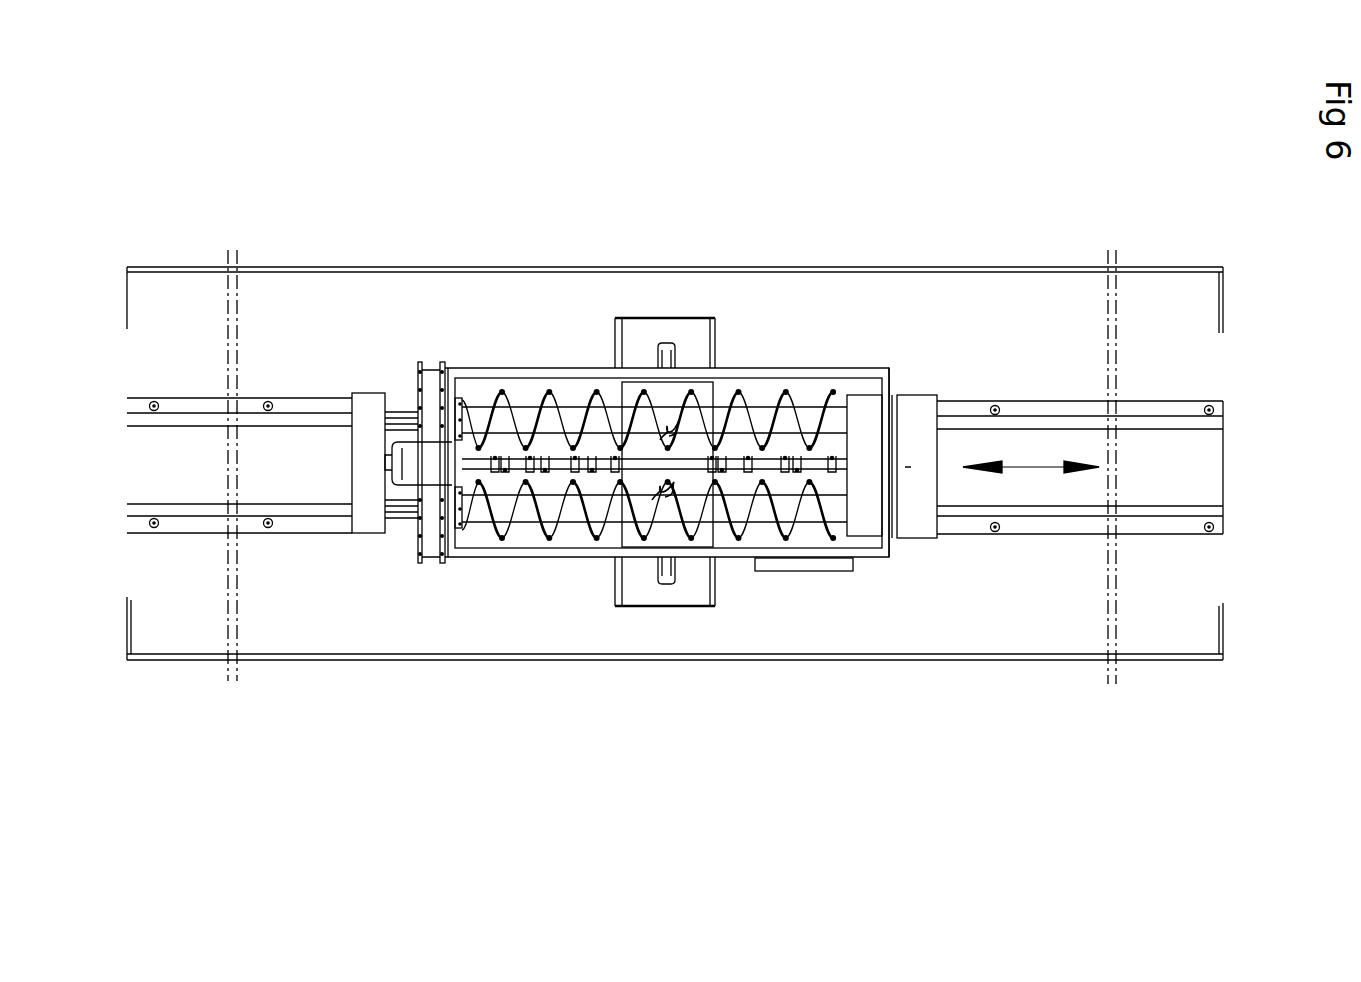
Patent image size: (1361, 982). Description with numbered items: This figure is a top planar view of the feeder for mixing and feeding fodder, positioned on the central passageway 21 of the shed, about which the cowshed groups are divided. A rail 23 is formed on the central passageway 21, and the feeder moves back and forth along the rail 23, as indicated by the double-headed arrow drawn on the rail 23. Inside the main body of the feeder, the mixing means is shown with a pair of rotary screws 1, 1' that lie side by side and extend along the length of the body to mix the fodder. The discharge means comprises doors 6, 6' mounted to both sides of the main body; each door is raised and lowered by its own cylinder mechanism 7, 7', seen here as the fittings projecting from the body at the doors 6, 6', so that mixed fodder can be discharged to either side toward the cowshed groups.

The central passageway 21 is at (412, 172).
The rail 23 is at (1182, 528).
The rotary screw 1 is at (684, 621).
The rotary screw 1' is at (683, 283).
The door 6 is at (681, 653).
The door 6' is at (647, 331).
The cylinder mechanism 7 is at (620, 672).
The cylinder mechanism 7' is at (706, 241).